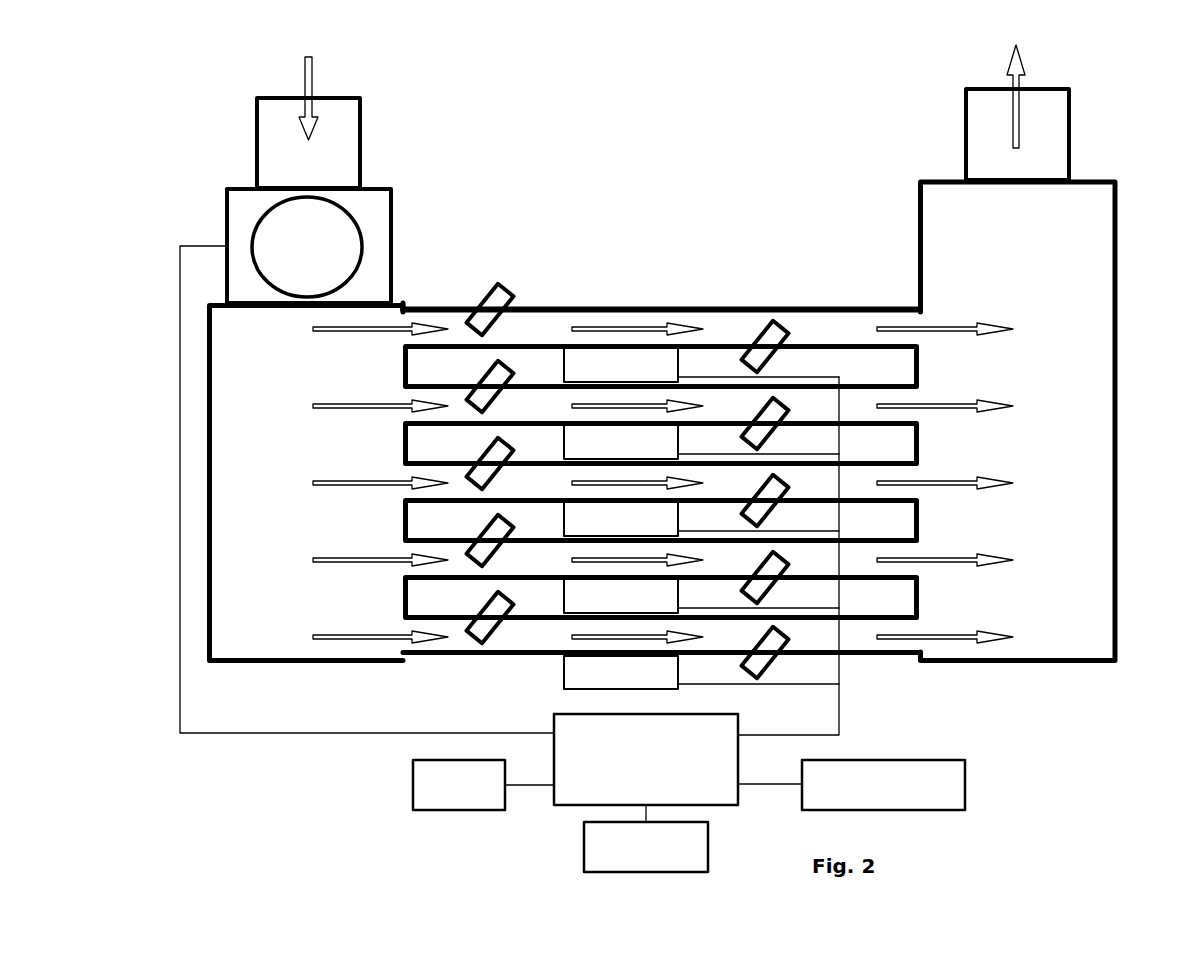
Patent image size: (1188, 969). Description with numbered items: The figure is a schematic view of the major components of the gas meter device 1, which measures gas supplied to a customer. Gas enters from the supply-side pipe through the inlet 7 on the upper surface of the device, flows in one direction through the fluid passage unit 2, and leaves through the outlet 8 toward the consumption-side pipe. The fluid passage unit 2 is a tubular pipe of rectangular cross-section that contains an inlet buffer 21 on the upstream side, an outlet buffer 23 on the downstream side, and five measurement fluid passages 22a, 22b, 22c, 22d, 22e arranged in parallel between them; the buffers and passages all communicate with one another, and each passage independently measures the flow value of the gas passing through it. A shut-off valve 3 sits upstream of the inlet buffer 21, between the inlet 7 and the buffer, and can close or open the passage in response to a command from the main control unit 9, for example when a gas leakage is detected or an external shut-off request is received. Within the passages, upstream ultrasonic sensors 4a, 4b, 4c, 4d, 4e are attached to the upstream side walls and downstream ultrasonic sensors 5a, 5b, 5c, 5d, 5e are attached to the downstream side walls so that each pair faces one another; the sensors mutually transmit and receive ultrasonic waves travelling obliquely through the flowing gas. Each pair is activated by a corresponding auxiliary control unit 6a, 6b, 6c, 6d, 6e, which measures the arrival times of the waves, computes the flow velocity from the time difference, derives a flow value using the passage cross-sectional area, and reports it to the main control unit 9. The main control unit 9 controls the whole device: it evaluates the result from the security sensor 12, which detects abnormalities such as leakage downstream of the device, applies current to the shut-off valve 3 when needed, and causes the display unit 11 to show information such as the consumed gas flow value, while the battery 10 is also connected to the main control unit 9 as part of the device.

The gas meter device 1 is at (110, 793).
The fluid passage unit 2 is at (637, 192).
The shut-off valve 3 is at (363, 233).
The upstream ultrasonic sensor 4a is at (513, 297).
The upstream ultrasonic sensor 4b is at (513, 374).
The upstream ultrasonic sensor 4c is at (513, 451).
The upstream ultrasonic sensor 4d is at (513, 528).
The upstream ultrasonic sensor 4e is at (513, 605).
The downstream ultrasonic sensor 5a is at (788, 332).
The downstream ultrasonic sensor 5b is at (788, 409).
The downstream ultrasonic sensor 5c is at (788, 486).
The downstream ultrasonic sensor 5d is at (788, 563).
The downstream ultrasonic sensor 5e is at (788, 640).
The auxiliary control unit 6a is at (680, 366).
The auxiliary control unit 6b is at (680, 443).
The auxiliary control unit 6c is at (680, 520).
The auxiliary control unit 6d is at (680, 597).
The auxiliary control unit 6e is at (680, 674).
The inlet 7 is at (363, 106).
The outlet 8 is at (1072, 110).
The main control unit 9 is at (740, 720).
The battery 10 is at (413, 780).
The display unit 11 is at (710, 843).
The security sensor 12 is at (967, 782).
The inlet buffer 21 is at (388, 320).
The measurement fluid passage 22a is at (852, 311).
The measurement fluid passage 22b is at (852, 388).
The measurement fluid passage 22c is at (852, 465).
The measurement fluid passage 22d is at (852, 542).
The measurement fluid passage 22e is at (852, 619).
The outlet buffer 23 is at (940, 273).